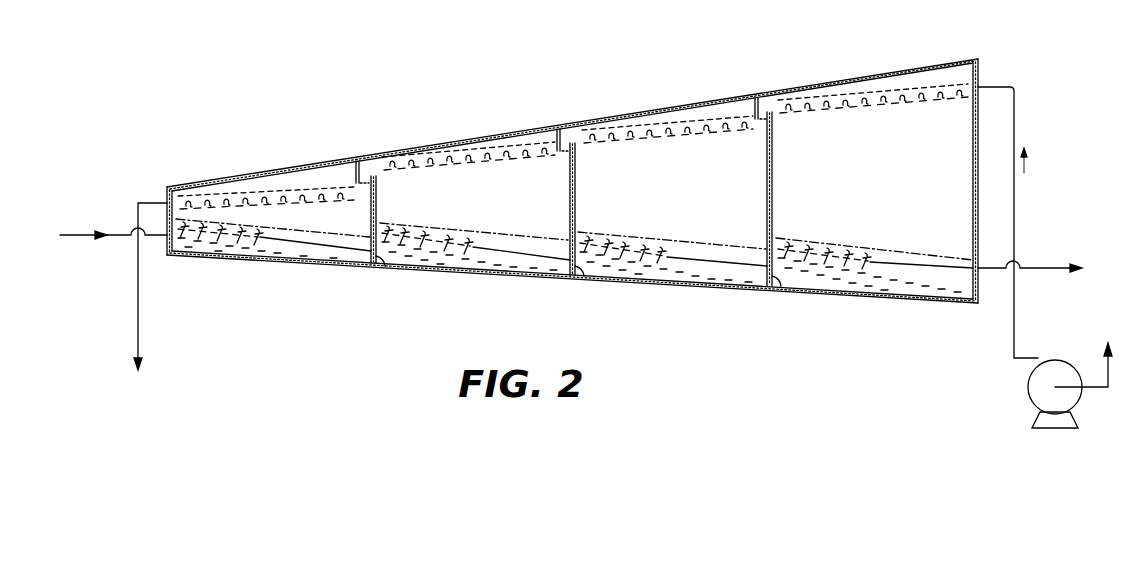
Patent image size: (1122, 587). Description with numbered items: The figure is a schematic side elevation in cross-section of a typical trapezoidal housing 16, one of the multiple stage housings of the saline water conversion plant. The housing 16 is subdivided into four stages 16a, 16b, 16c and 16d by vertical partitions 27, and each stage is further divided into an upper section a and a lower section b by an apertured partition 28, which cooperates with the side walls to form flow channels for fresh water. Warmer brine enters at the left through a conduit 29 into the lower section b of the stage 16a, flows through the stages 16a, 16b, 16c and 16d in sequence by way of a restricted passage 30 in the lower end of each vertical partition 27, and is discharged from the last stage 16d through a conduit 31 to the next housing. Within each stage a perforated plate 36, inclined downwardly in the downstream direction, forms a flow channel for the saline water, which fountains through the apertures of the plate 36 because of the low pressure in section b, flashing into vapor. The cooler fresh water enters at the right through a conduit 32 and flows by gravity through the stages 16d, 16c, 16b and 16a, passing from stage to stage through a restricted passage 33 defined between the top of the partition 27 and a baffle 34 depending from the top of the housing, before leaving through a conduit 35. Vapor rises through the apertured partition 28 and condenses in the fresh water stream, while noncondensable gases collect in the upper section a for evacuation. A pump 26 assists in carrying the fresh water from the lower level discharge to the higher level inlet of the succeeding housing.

The housing 16 is at (494, 108).
The stage 16a is at (229, 172).
The stage 16b is at (452, 138).
The stage 16c is at (675, 100).
The stage 16d is at (896, 66).
The pump 26 is at (1028, 388).
The vertical partition 27 is at (378, 198).
The apertured partition 28 is at (252, 203).
The conduit 29 is at (80, 231).
The restricted passage 30 is at (372, 258).
The conduit 31 is at (1043, 266).
The conduit 32 is at (1007, 84).
The restricted passage 33 is at (369, 183).
The baffle 34 is at (357, 162).
The conduit 35 is at (137, 282).
The plate 36 is at (275, 243).
The upper section a is at (317, 174).
The lower section b is at (323, 229).